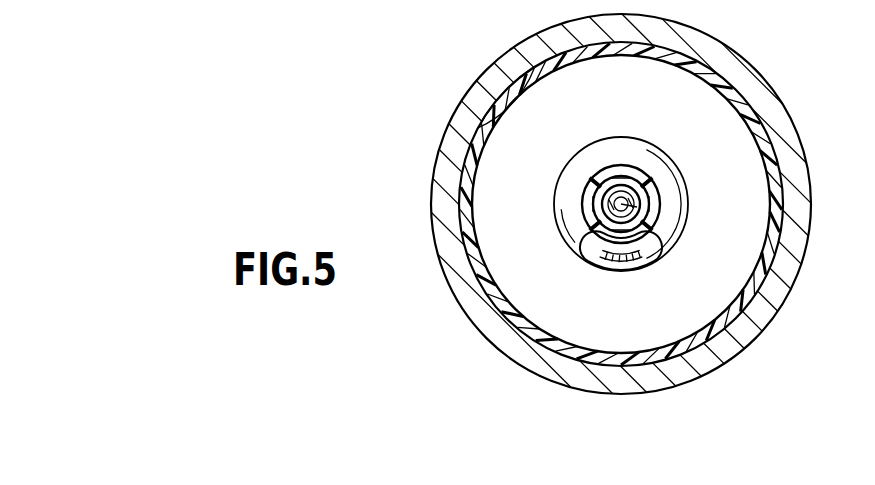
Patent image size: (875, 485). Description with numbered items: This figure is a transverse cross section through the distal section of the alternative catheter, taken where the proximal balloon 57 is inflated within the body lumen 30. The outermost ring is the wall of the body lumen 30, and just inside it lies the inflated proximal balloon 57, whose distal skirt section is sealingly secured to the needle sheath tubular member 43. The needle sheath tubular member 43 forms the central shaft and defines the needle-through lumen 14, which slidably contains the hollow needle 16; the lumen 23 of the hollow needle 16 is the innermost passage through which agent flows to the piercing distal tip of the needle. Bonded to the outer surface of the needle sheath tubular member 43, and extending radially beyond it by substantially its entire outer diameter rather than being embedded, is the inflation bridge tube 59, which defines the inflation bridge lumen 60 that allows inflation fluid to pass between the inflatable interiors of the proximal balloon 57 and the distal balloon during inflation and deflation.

The body lumen 30 is at (523, 107).
The proximal balloon 57 is at (776, 222).
The needle sheath tubular member 43 is at (584, 221).
The needle-through lumen 14 is at (595, 182).
The hollow needle 16 is at (631, 190).
The lumen of the hollow needle 23 is at (637, 207).
The inflation bridge tube 59 is at (640, 266).
The inflation bridge lumen 60 is at (608, 255).